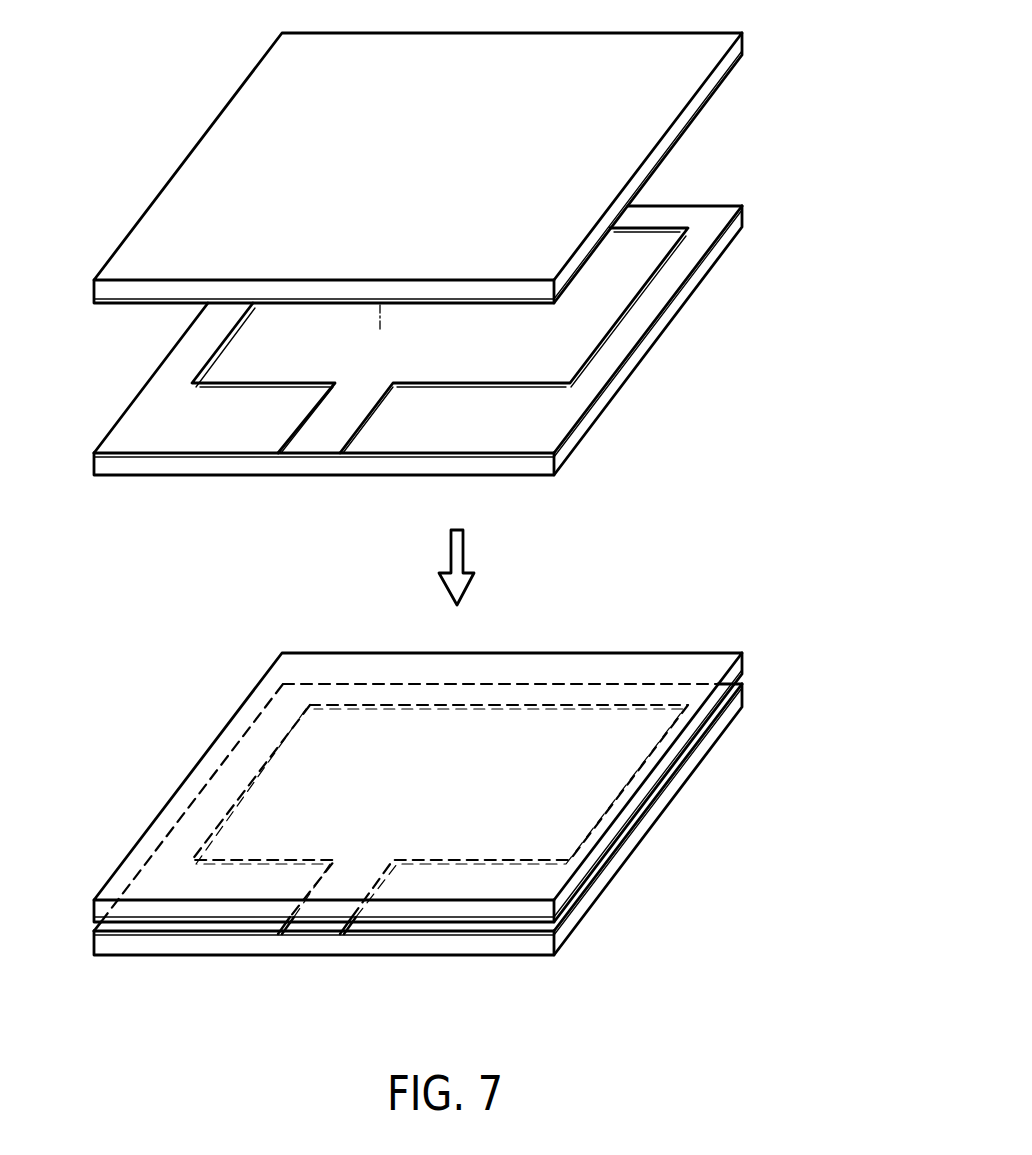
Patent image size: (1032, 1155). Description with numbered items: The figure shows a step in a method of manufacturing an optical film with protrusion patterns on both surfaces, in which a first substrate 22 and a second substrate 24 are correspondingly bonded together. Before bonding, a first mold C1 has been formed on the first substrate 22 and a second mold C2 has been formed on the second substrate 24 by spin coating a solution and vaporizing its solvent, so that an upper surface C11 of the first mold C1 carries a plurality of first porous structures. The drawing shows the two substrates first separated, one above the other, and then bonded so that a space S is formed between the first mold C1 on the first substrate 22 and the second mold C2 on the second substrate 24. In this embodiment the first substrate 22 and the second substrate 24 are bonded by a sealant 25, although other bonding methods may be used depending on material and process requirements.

The second substrate 24 is at (451, 501).
The first substrate 22 is at (454, 612).
The sealant 25 is at (577, 373).
The space S is at (717, 173).
The first mold C1 is at (160, 465).
The second mold C2 is at (110, 305).
The upper surface of the first mold C11 is at (645, 308).